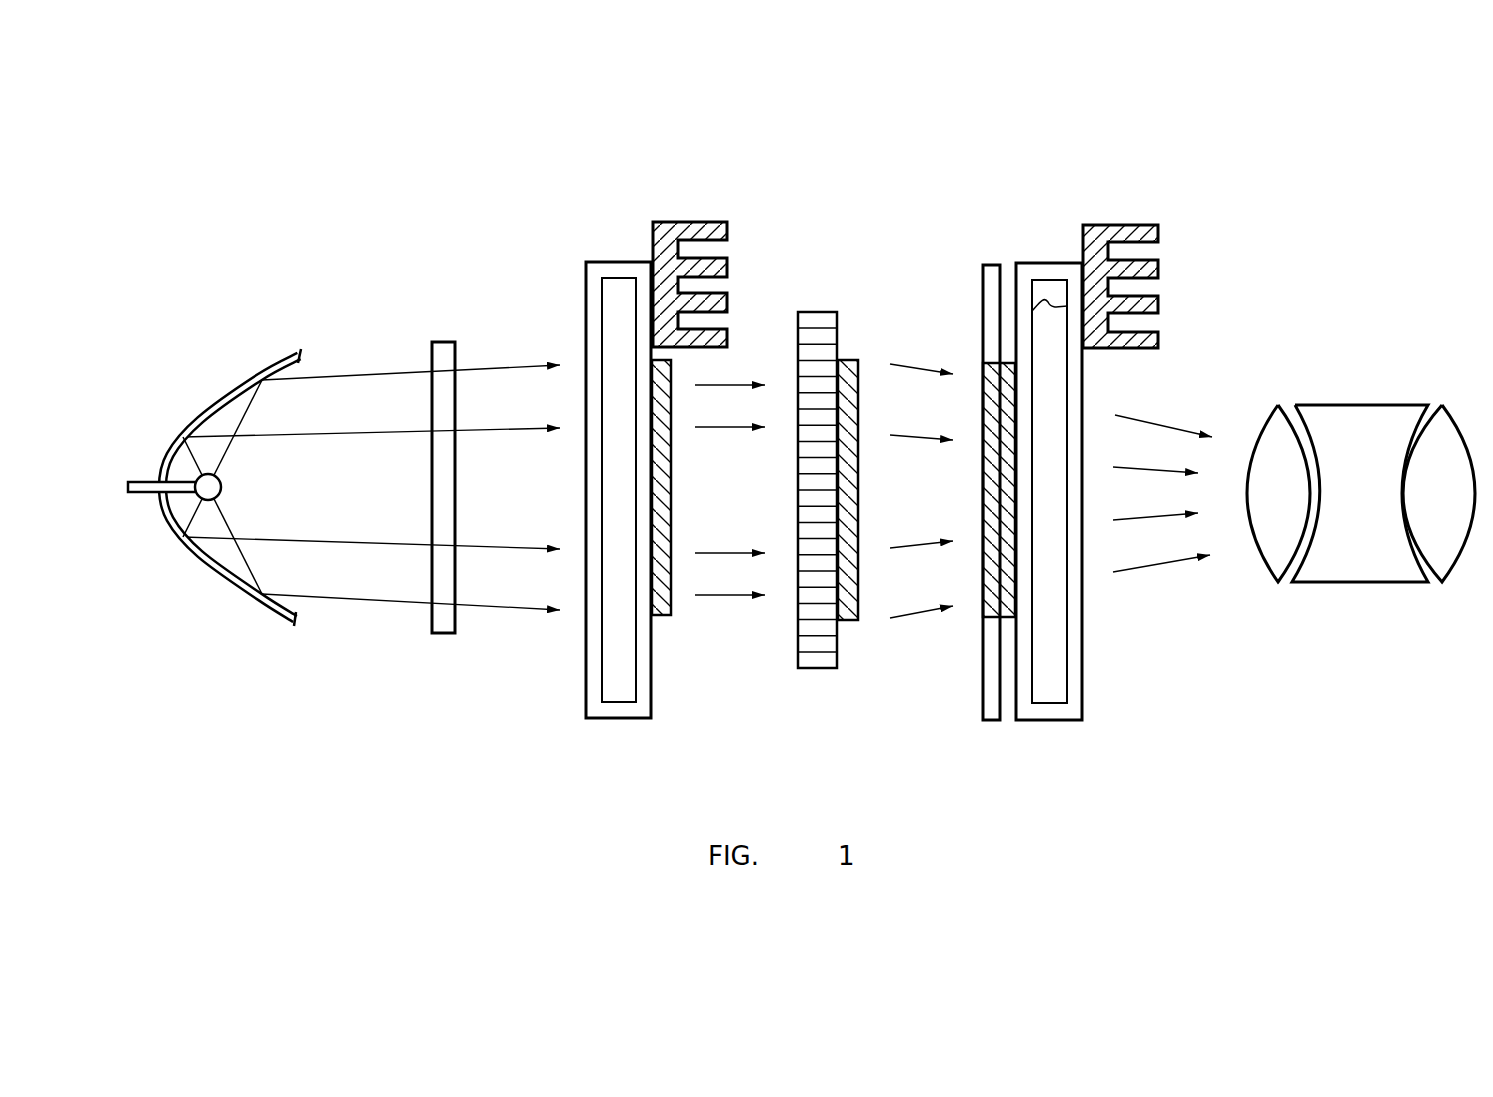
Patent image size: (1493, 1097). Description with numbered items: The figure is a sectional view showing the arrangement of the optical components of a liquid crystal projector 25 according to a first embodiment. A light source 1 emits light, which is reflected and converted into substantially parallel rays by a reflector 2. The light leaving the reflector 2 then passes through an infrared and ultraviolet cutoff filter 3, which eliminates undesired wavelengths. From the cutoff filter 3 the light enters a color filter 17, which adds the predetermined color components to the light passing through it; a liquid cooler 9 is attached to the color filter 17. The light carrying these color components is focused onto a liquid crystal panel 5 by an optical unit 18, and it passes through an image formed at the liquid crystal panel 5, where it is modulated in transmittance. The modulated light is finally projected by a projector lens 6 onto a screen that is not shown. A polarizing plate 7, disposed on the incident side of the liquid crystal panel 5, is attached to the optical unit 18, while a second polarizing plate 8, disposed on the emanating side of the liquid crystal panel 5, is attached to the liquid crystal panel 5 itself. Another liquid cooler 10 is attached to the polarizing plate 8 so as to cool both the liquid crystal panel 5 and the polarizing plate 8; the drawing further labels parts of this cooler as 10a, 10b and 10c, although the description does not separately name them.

The light source 1 is at (198, 490).
The reflector 2 is at (262, 608).
The infrared and ultraviolet cutoff filter 3 is at (432, 621).
The liquid crystal panel 5 is at (985, 708).
The projector lens 6 is at (1470, 621).
The polarizing plate 7 is at (853, 360).
The polarizing plate 8 is at (1007, 363).
The liquid cooler 9 is at (728, 190).
The liquid cooler 10 is at (1152, 753).
The transparent substrate 10a is at (1078, 398).
The heat sink 10b is at (1158, 242).
The liquid crystal layer 10c is at (1055, 648).
The color filter 17 is at (655, 617).
The optical unit 18 is at (810, 670).
The liquid crystal projector 25 is at (912, 152).